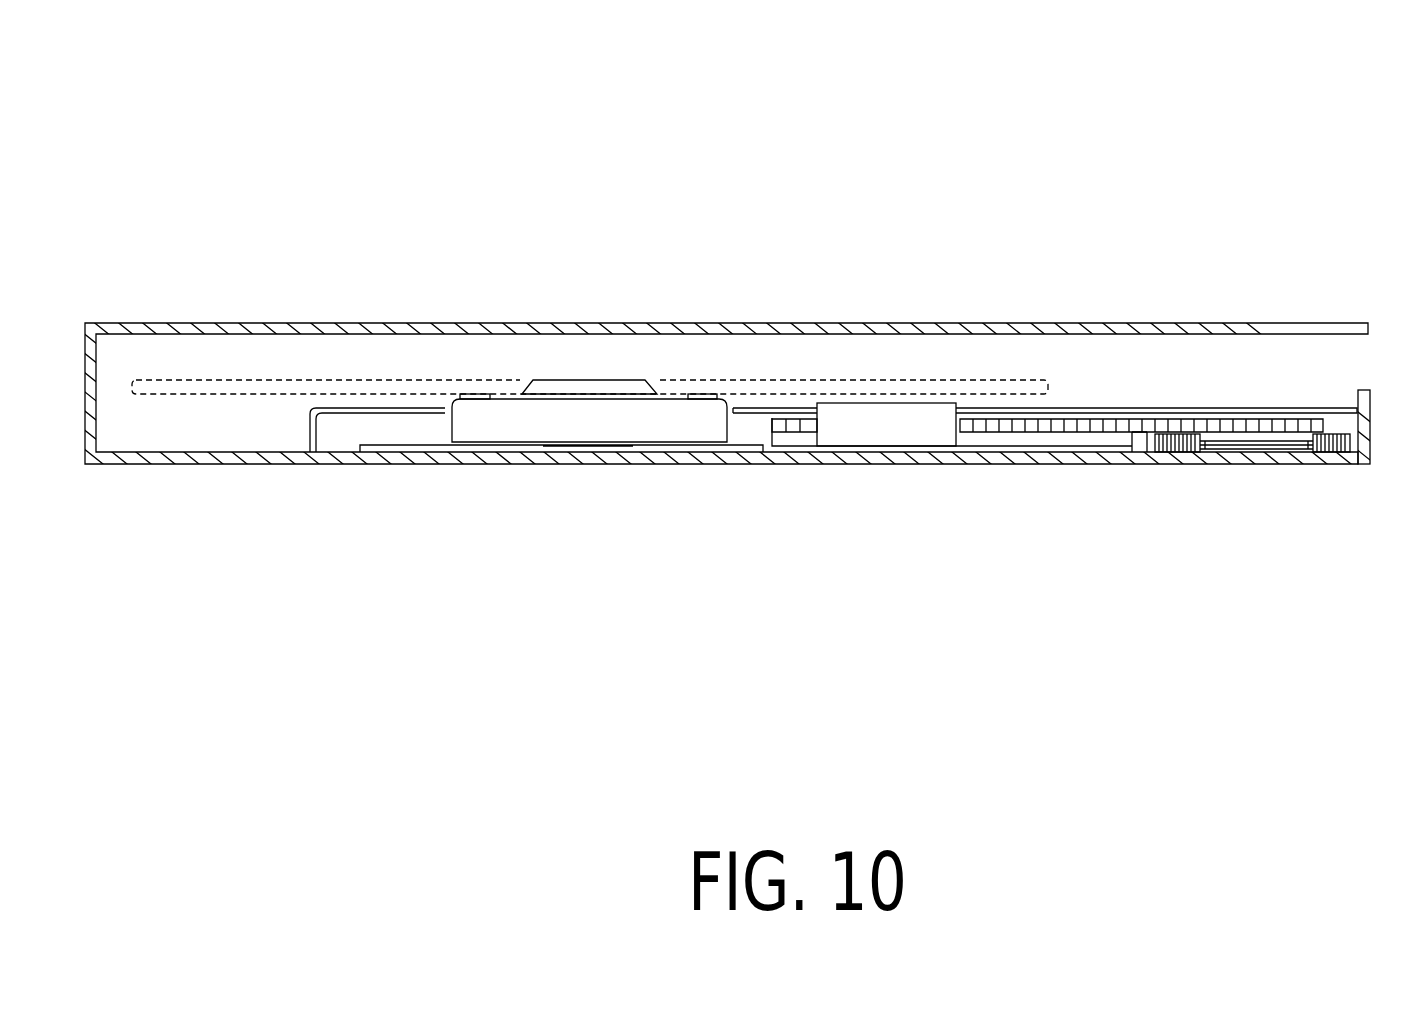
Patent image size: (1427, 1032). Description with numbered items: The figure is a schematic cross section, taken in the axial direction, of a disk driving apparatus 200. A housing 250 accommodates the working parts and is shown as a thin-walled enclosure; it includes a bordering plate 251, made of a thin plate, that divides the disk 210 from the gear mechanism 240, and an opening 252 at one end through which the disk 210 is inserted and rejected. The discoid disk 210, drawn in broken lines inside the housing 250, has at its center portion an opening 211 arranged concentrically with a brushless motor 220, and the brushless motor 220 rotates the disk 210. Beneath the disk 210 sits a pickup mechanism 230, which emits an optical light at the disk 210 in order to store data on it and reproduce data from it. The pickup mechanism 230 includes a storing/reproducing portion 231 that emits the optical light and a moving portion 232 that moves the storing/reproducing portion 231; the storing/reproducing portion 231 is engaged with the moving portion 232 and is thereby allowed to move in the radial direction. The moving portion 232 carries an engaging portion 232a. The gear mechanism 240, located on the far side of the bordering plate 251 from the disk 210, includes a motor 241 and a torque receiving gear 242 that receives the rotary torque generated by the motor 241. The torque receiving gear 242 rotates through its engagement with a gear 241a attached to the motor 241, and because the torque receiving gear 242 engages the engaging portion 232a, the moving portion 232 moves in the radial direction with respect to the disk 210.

The disk driving apparatus 200 is at (222, 146).
The disk 210 is at (735, 355).
The opening 211 is at (655, 390).
The brushless motor 220 is at (435, 433).
The pickup mechanism 230 is at (882, 462).
The storing/reproducing portion 231 is at (865, 435).
The moving portion 232 is at (1057, 447).
The engaging portion 232a is at (986, 433).
The gear mechanism 240 is at (1275, 446).
The motor 241 is at (1228, 442).
The gear 241a is at (1310, 433).
The torque receiving gear 242 is at (1140, 435).
The housing 250 is at (364, 305).
The bordering plate 251 is at (1160, 410).
The opening 252 is at (1358, 362).